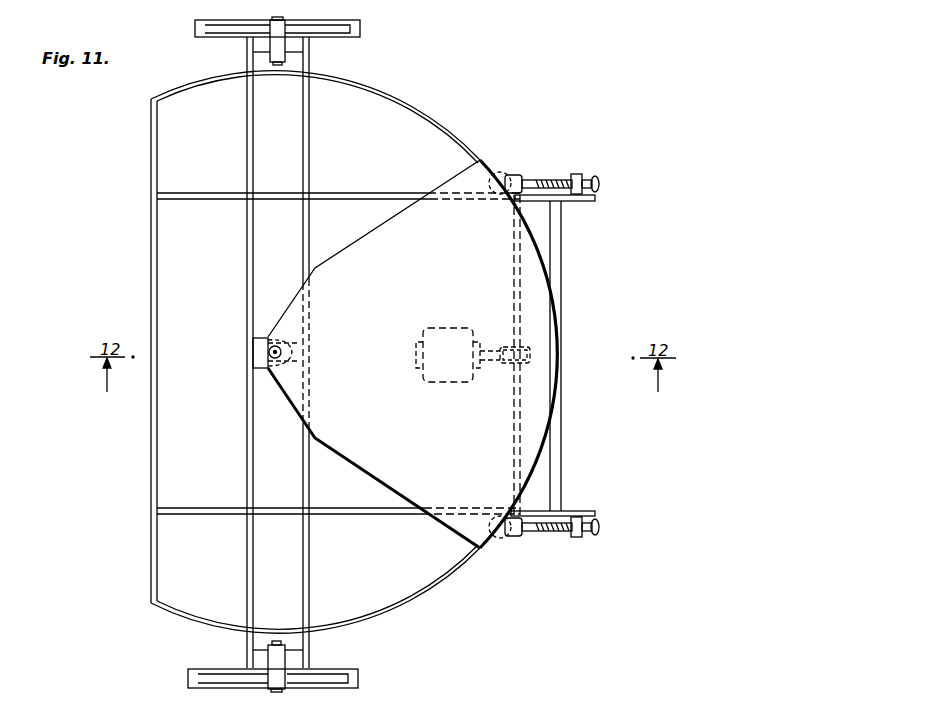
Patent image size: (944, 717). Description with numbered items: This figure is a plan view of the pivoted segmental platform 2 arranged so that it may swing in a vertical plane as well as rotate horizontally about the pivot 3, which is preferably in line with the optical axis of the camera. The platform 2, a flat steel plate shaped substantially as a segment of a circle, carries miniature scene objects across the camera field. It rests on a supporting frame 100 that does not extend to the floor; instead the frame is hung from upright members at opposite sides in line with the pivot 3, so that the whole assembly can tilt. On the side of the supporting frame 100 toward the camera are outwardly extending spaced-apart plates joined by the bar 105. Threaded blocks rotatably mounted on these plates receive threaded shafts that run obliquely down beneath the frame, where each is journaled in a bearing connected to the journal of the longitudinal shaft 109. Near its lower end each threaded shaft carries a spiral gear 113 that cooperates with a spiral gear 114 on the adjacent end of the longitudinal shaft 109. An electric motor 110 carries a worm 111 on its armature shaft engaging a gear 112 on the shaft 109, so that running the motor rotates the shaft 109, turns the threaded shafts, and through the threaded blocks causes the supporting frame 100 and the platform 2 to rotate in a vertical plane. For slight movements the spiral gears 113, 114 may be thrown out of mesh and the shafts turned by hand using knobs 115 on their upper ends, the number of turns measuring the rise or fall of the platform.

The platform 2 is at (362, 240).
The pivot 3 is at (282, 352).
The supporting frame 100 is at (381, 514).
The bar 105 is at (562, 474).
The longitudinal shaft 109 is at (514, 456).
The electric motor 110 is at (447, 383).
The worm 111 is at (508, 364).
The gear 112 is at (530, 357).
The spiral gear 113 is at (504, 540).
The spiral gear 114 is at (518, 537).
The knobs 115 is at (600, 528).